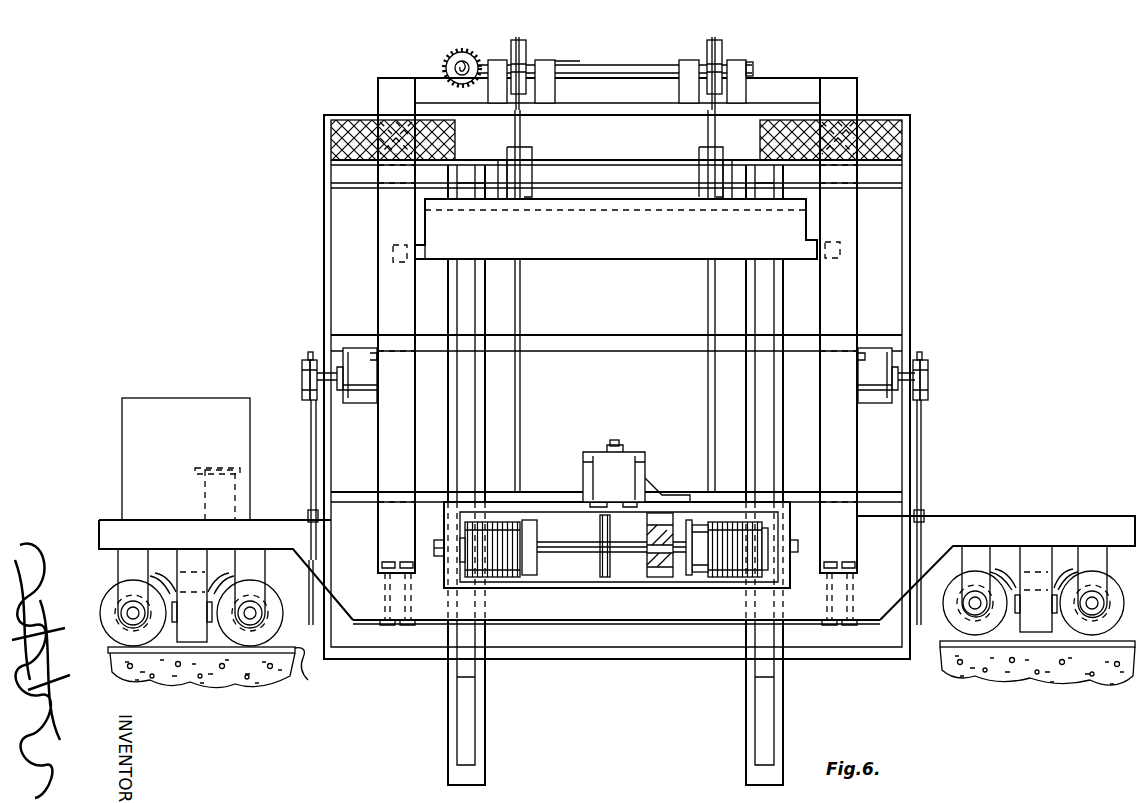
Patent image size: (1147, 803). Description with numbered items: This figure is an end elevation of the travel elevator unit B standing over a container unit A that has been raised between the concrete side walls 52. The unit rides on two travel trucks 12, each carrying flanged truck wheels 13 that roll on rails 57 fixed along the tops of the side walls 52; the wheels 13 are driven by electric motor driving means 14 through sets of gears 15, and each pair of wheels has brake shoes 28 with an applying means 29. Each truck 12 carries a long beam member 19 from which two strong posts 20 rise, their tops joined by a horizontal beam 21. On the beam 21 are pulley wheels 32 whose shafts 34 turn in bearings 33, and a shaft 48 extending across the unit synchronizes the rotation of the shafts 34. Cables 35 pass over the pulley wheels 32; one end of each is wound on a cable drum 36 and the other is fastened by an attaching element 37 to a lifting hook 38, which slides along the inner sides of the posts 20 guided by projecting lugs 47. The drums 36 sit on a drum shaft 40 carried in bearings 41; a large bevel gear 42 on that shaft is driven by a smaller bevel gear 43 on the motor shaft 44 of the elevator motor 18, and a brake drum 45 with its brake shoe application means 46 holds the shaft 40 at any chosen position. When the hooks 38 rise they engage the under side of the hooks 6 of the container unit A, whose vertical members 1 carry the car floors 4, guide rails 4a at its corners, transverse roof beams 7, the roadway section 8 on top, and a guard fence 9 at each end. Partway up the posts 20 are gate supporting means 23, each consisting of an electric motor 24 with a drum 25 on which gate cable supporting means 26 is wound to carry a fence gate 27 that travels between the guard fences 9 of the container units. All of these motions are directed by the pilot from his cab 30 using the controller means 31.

The vertical member 1 is at (748, 312).
The car floor 4 is at (600, 335).
The guide rail 4a is at (324, 258).
The hook 6 is at (480, 200).
The transverse roof beam 7 is at (670, 472).
The course floor section 8 is at (598, 160).
The guard fence 9 is at (348, 120).
The travel truck 12 is at (99, 532).
The truck wheel 13 is at (118, 584).
The electric motor driving means 14 is at (192, 640).
The set of gears 15 is at (262, 612).
The elevator motor means 18 is at (640, 470).
The long beam member 19 is at (840, 621).
The post 20 is at (858, 232).
The horizontal beam 21 is at (796, 78).
The gate supporting means 23 is at (370, 398).
The electric motor 24 is at (377, 380).
The drum 25 is at (302, 376).
The gate cable supporting means 26 is at (311, 437).
The fence gate 27 is at (308, 512).
The brake shoe 28 is at (162, 575).
The applying means 29 is at (921, 437).
The pilot's cab 30 is at (178, 398).
The controller means 31 is at (230, 468).
The pulley wheel 32 is at (526, 54).
The bearing 33 is at (562, 64).
The shaft 34 is at (625, 65).
The cable 35 is at (522, 298).
The cable drum 36 is at (524, 580).
The cable attaching element 37 is at (532, 152).
The lifting hook 38 is at (612, 258).
The drum shaft 40 is at (552, 552).
The bearing 41 is at (442, 562).
The bevel gear 42 is at (605, 580).
The bevel gear 43 is at (623, 535).
The motor shaft 44 is at (615, 440).
The brake drum 45 is at (660, 582).
The brake shoe application means 46 is at (673, 517).
The projecting lug 47 is at (420, 259).
The shaft 48 is at (443, 66).
The side wall 52 is at (250, 686).
The rail 57 is at (308, 680).